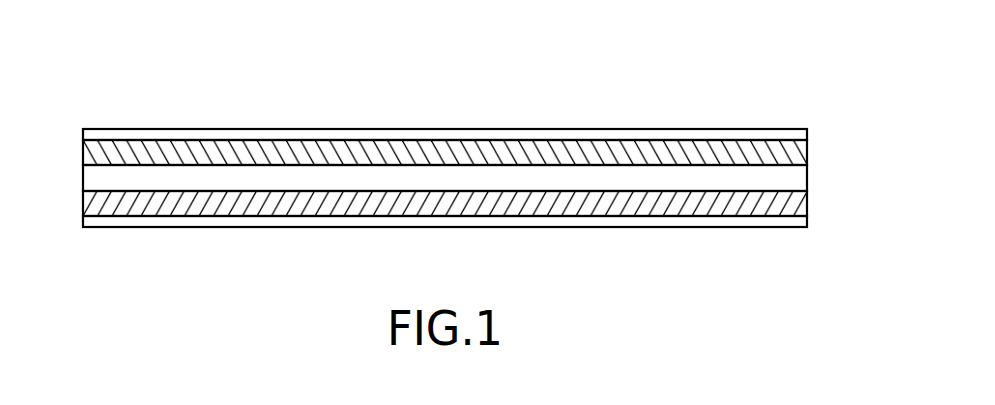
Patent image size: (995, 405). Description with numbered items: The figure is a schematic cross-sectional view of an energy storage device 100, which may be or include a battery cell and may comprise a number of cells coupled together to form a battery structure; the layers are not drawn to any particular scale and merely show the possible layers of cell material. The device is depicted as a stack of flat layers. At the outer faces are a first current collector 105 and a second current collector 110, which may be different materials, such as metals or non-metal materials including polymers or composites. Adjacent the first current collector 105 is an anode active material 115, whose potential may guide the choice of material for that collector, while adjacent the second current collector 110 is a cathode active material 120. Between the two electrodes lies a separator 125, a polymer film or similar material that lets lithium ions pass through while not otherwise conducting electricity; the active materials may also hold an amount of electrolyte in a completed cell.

The energy storage device 100 is at (201, 72).
The first current collector 105 is at (277, 227).
The second current collector 110 is at (663, 128).
The anode active material 115 is at (83, 198).
The cathode active material 120 is at (807, 148).
The separator 125 is at (807, 178).